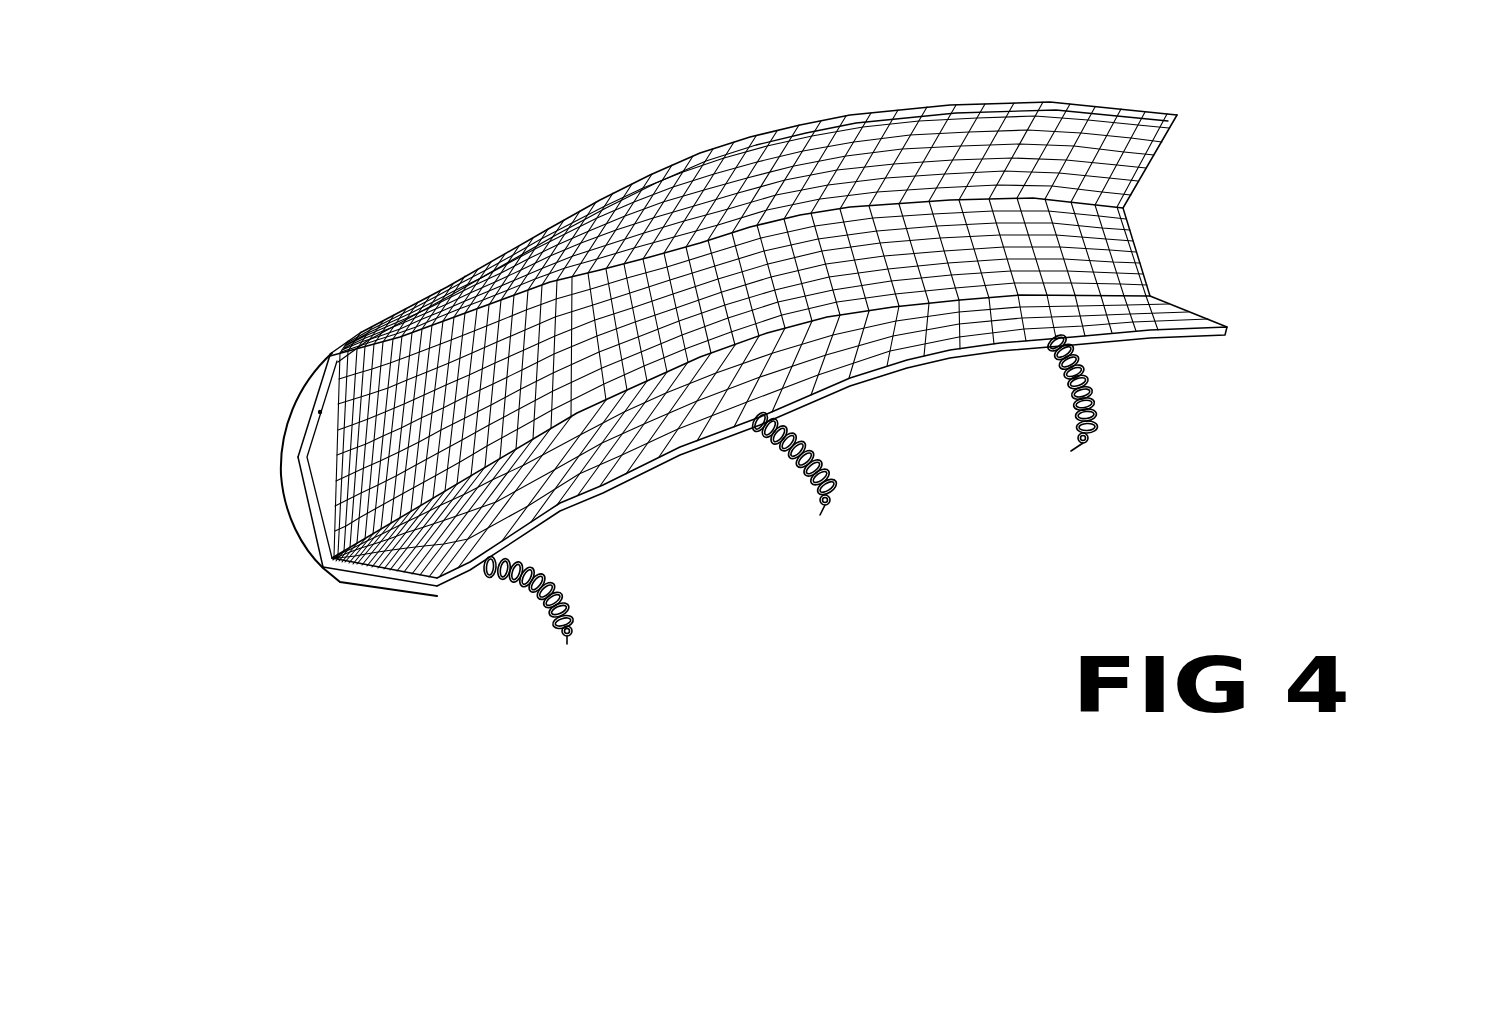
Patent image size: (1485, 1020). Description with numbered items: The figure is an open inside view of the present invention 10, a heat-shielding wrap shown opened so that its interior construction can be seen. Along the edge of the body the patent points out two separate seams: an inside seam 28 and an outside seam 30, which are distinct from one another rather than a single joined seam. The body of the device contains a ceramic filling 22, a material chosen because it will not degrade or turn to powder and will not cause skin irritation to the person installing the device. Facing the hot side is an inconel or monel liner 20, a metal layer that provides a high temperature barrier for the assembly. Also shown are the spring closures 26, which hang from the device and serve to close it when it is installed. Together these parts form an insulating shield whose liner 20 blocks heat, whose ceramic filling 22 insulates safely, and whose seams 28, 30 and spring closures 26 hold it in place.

The present invention 10 is at (819, 385).
The inconel or monel liner 20 is at (1162, 335).
The ceramic filling 22 is at (284, 487).
The spring closures 26 is at (572, 632).
The inside seam 28 is at (307, 437).
The outside seam 30 is at (307, 383).